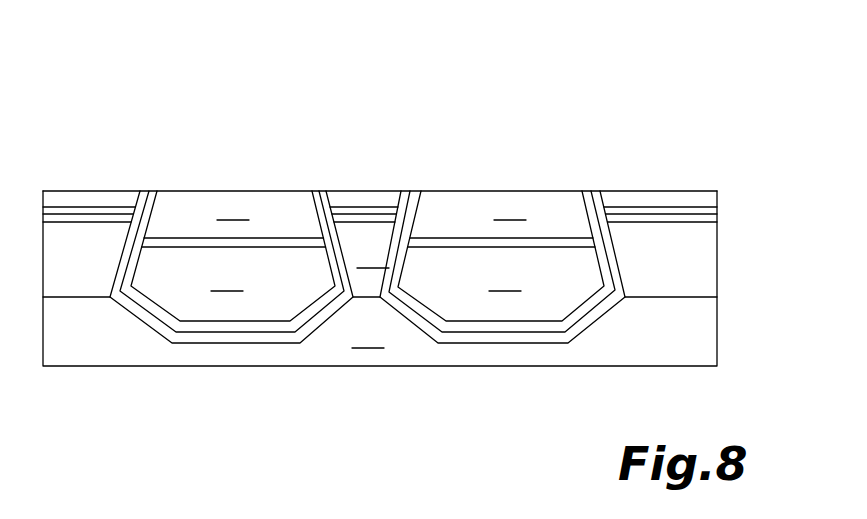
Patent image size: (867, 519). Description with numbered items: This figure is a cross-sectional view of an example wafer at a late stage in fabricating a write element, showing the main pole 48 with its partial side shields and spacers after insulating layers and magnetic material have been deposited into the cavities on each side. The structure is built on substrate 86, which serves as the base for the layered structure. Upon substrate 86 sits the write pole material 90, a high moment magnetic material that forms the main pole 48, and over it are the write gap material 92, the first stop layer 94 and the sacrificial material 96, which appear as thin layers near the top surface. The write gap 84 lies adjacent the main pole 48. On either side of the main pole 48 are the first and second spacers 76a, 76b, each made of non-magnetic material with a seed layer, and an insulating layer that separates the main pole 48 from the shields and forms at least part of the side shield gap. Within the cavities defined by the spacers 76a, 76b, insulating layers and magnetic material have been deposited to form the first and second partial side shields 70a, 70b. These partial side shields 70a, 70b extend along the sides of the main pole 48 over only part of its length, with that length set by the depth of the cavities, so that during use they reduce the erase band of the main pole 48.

The main pole 48 is at (367, 235).
The first partial side shield 70a is at (211, 201).
The second partial side shield 70b is at (478, 209).
The first spacer 76a is at (257, 306).
The second spacer 76b is at (511, 307).
The write gap 84 is at (395, 223).
The substrate 86 is at (704, 333).
The write pole material 90 is at (704, 262).
The write gap material 92 is at (344, 212).
The first stop layer 94 is at (712, 208).
The sacrificial material 96 is at (703, 197).